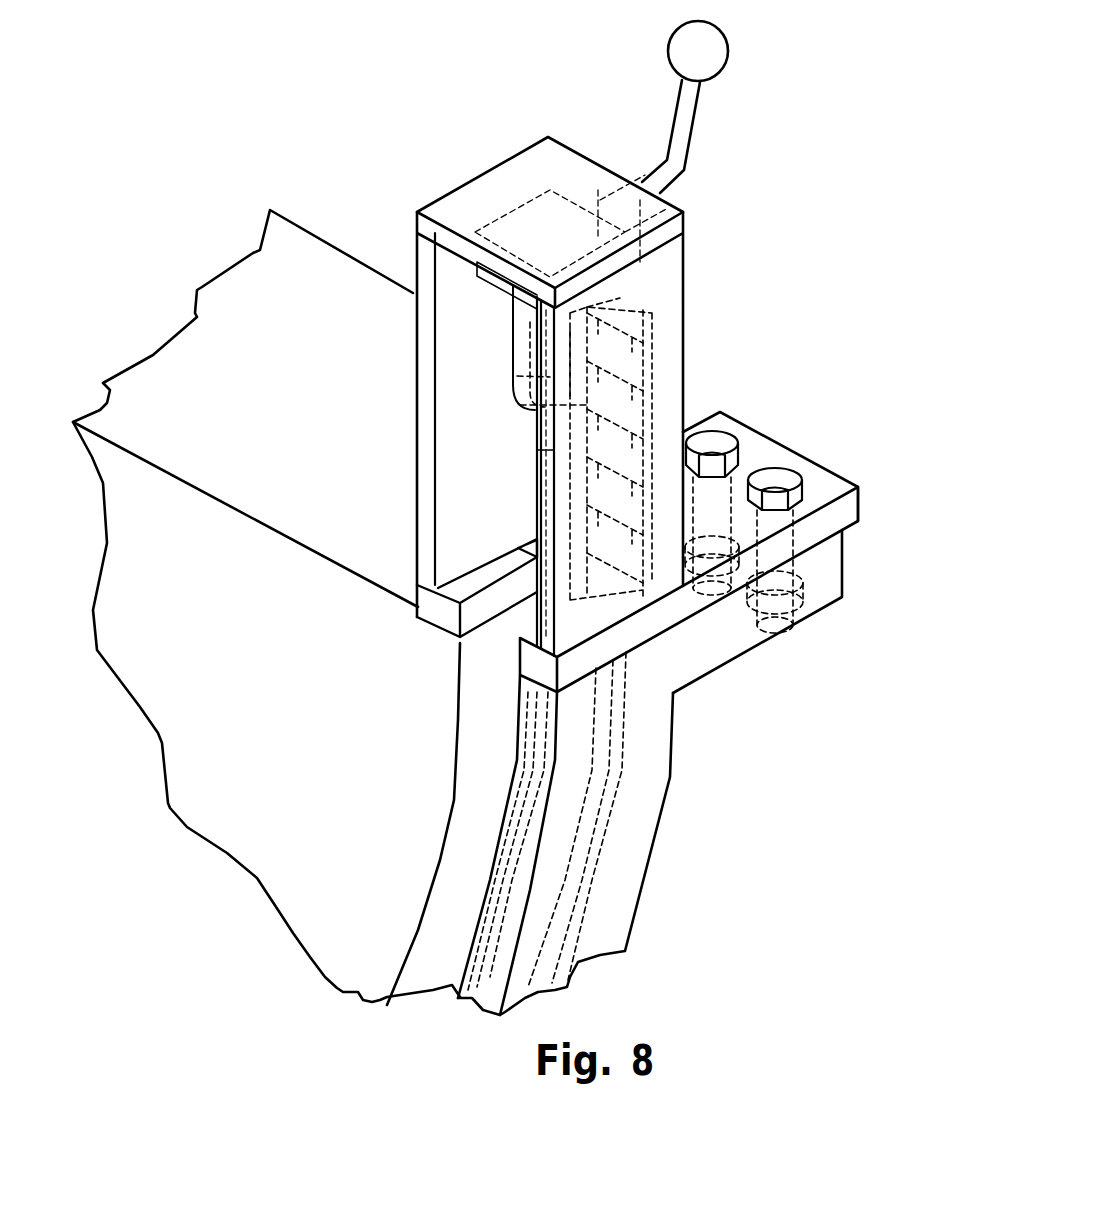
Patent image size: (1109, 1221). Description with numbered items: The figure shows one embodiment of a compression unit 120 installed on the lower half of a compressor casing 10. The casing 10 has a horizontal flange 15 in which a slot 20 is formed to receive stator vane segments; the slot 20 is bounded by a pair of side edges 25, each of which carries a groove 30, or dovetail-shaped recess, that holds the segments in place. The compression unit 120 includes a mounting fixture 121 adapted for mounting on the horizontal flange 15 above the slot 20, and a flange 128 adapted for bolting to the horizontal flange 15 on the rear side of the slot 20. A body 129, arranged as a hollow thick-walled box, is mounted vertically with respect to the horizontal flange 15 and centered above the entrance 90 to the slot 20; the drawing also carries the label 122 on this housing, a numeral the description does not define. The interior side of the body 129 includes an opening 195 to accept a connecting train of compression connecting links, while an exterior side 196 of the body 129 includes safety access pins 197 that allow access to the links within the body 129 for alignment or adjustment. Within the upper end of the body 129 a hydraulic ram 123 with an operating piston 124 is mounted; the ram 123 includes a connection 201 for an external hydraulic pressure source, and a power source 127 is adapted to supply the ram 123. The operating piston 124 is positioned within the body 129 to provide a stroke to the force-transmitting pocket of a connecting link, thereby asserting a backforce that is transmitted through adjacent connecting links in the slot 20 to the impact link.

The casing 10 is at (667, 777).
The horizontal flange 15 is at (167, 378).
The slot 20 is at (497, 763).
The side edge 25 is at (593, 855).
The groove 30 is at (580, 910).
The entrance 90 is at (521, 615).
The compression unit 120 is at (871, 134).
The mounting fixture 121 is at (810, 447).
The housing 122 is at (735, 238).
The hydraulic ram 123 is at (522, 340).
The operating piston 124 is at (537, 448).
The power source 127 is at (704, 55).
The flange 128 is at (857, 503).
The body 129 is at (685, 340).
The opening 195 is at (468, 417).
The exterior side 196 is at (620, 298).
The safety access pins 197 is at (632, 330).
The connection 201 is at (647, 186).